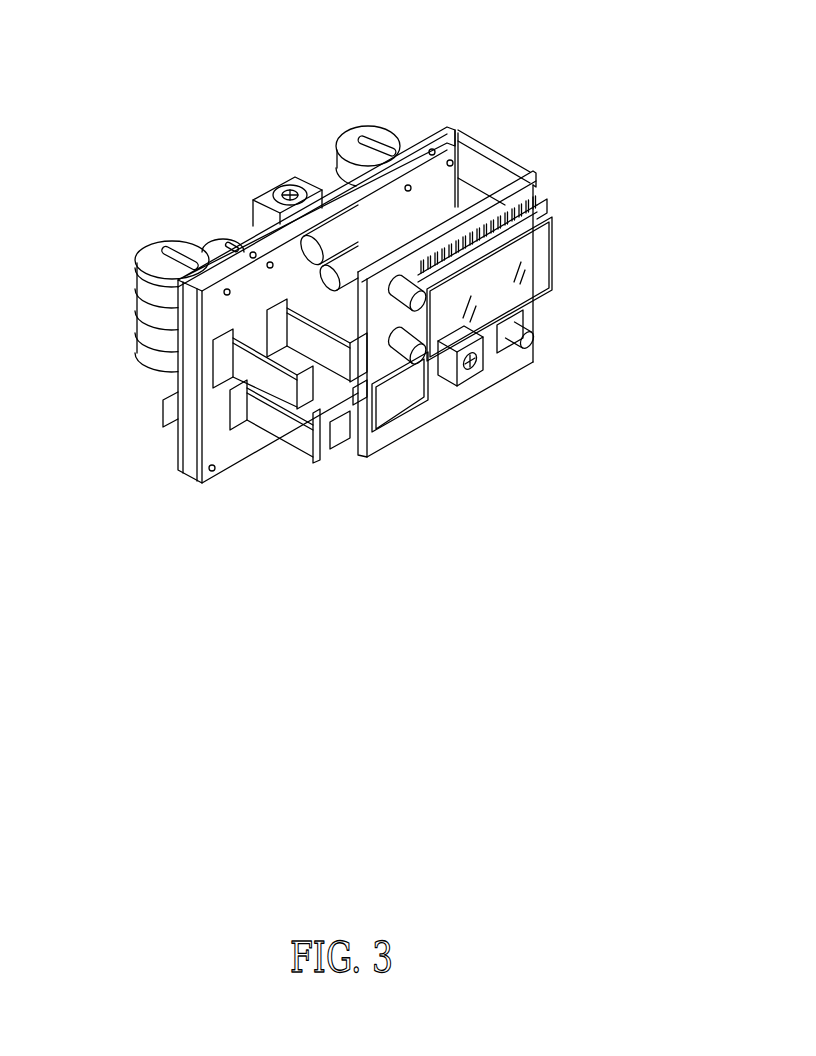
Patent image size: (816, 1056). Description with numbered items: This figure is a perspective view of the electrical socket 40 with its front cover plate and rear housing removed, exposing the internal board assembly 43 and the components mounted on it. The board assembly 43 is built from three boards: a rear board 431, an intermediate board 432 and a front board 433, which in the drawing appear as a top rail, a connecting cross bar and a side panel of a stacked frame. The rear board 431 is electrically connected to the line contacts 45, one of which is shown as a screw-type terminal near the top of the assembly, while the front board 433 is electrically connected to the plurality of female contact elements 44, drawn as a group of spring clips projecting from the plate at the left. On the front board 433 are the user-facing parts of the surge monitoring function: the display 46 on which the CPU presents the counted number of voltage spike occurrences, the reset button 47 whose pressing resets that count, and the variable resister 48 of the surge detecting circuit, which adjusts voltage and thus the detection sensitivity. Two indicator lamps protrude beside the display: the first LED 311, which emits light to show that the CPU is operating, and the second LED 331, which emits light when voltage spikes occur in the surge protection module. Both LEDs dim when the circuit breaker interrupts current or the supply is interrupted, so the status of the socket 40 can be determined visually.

The electrical socket 40 is at (107, 45).
The board assembly 43 is at (578, 22).
The rear board 431 is at (452, 127).
The intermediate board 432 is at (472, 136).
The front board 433 is at (533, 173).
The female contact elements 44 is at (302, 432).
The line contacts 45 is at (283, 182).
The display 46 is at (535, 267).
The reset button 47 is at (530, 343).
The variable resister 48 is at (478, 365).
The first LED 311 is at (403, 295).
The second LED 331 is at (428, 357).